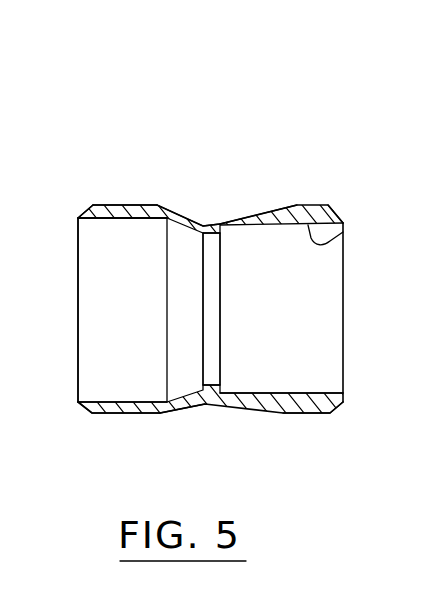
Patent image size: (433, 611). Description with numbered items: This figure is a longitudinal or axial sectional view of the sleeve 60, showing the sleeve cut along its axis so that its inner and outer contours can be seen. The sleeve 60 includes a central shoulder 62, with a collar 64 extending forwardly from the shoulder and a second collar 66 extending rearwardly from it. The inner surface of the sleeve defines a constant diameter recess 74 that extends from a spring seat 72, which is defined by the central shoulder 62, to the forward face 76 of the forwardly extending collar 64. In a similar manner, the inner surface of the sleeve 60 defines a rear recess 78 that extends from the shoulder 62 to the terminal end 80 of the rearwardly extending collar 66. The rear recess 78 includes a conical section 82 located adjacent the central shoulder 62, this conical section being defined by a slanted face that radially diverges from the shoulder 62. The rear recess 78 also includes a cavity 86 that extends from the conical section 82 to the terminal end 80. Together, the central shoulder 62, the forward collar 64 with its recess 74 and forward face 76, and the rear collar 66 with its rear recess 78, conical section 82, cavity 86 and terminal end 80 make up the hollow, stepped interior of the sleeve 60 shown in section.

The sleeve 60 is at (227, 172).
The central shoulder 62 is at (220, 240).
The collar 64 is at (318, 408).
The collar 66 is at (123, 410).
The spring seat 72 is at (240, 214).
The constant diameter recess 74 is at (348, 212).
The forward face 76 is at (343, 228).
The rear recess 78 is at (119, 237).
The terminal end 80 is at (73, 214).
The conical section 82 is at (177, 230).
The cavity 86 is at (145, 222).